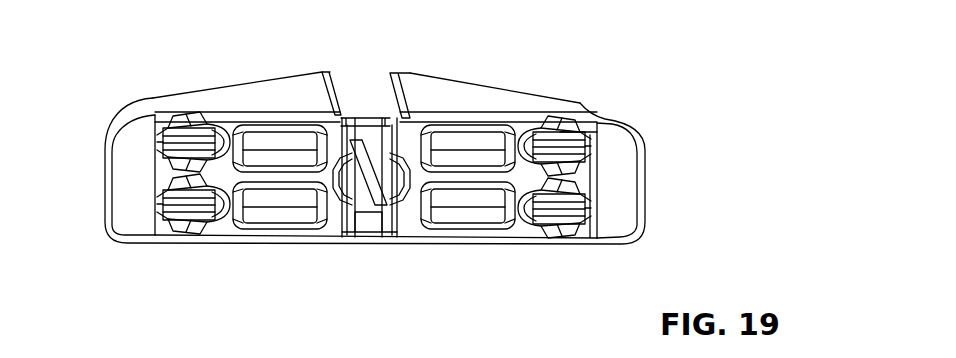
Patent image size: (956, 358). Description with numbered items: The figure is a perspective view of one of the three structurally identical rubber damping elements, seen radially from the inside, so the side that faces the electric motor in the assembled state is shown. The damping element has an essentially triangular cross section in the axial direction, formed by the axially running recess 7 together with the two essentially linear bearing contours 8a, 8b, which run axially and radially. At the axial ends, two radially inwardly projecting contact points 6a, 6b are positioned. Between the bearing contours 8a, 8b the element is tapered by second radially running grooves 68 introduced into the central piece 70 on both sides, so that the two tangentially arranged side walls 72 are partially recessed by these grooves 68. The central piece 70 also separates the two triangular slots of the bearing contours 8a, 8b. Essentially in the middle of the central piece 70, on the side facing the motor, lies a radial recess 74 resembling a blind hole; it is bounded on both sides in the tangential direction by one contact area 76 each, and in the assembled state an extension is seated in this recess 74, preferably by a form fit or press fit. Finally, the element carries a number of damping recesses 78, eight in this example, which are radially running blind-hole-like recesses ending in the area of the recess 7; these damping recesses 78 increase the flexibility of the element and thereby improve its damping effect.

The contact point 6a is at (125, 198).
The contact point 6b is at (617, 197).
The recess 7 is at (273, 243).
The bearing contour 8a is at (235, 82).
The bearing contour 8b is at (510, 85).
The second radially running groove 68 is at (355, 90).
The central piece 70 is at (348, 130).
The side wall 72 is at (282, 90).
The radial recess 74 is at (365, 195).
The contact area 76 is at (390, 128).
The damping recess 78 is at (193, 155).